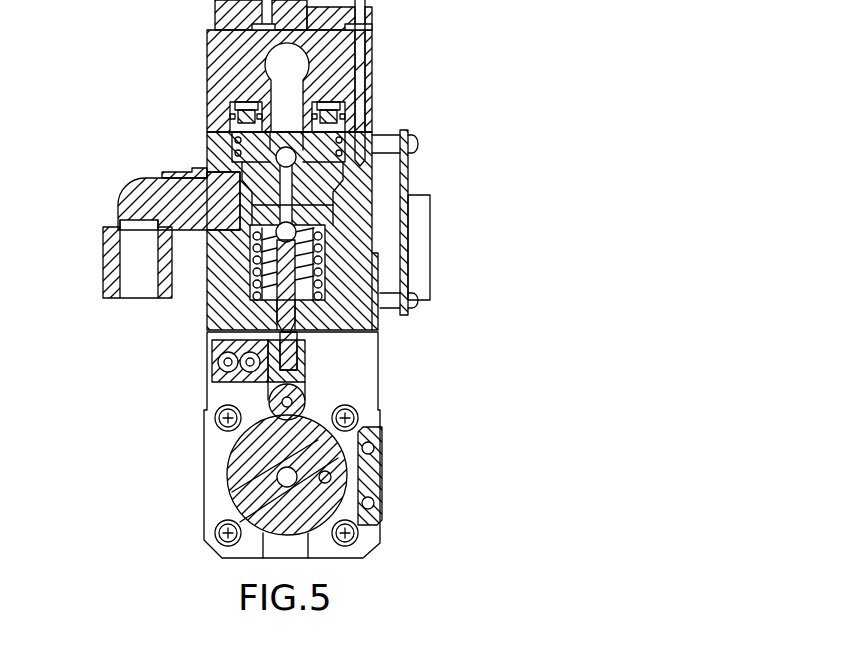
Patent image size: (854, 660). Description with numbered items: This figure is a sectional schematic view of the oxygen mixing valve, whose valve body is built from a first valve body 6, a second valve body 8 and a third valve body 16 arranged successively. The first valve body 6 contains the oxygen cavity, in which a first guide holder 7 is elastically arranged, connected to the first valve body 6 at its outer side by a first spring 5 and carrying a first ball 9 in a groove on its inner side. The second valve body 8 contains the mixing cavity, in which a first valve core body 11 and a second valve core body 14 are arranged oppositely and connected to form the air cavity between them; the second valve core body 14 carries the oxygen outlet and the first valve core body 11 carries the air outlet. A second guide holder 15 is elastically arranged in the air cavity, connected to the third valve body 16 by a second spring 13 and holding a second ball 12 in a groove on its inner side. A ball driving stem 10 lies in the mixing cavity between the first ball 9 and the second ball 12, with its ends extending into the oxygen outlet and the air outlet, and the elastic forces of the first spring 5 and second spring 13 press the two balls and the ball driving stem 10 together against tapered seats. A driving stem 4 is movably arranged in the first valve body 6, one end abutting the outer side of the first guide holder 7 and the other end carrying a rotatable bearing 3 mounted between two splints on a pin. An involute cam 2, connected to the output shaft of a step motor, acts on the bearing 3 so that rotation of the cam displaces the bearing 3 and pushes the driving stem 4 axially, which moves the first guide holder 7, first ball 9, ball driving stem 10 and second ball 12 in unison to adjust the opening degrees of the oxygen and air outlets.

The involute cam 2 is at (305, 465).
The bearing 3 is at (303, 400).
The driving stem 4 is at (295, 333).
The first spring 5 is at (300, 258).
The first valve body 6 is at (353, 292).
The first guide holder 7 is at (270, 254).
The second valve body 8 is at (372, 198).
The first ball 9 is at (268, 237).
The ball driving stem 10 is at (283, 176).
The first valve core body 11 is at (265, 167).
The second ball 12 is at (160, 173).
The second spring 13 is at (372, 145).
The second valve core body 14 is at (248, 115).
The second guide holder 15 is at (272, 147).
The third valve body 16 is at (335, 57).